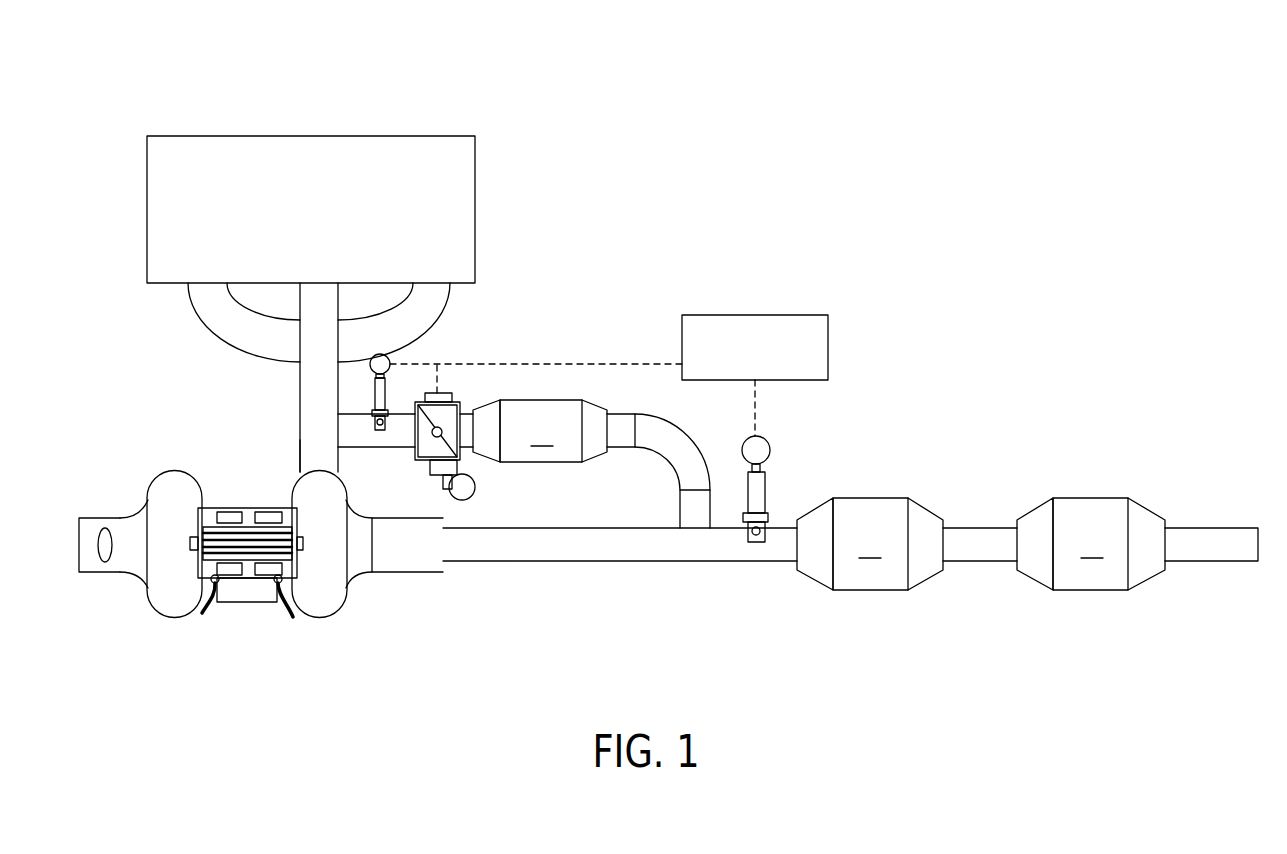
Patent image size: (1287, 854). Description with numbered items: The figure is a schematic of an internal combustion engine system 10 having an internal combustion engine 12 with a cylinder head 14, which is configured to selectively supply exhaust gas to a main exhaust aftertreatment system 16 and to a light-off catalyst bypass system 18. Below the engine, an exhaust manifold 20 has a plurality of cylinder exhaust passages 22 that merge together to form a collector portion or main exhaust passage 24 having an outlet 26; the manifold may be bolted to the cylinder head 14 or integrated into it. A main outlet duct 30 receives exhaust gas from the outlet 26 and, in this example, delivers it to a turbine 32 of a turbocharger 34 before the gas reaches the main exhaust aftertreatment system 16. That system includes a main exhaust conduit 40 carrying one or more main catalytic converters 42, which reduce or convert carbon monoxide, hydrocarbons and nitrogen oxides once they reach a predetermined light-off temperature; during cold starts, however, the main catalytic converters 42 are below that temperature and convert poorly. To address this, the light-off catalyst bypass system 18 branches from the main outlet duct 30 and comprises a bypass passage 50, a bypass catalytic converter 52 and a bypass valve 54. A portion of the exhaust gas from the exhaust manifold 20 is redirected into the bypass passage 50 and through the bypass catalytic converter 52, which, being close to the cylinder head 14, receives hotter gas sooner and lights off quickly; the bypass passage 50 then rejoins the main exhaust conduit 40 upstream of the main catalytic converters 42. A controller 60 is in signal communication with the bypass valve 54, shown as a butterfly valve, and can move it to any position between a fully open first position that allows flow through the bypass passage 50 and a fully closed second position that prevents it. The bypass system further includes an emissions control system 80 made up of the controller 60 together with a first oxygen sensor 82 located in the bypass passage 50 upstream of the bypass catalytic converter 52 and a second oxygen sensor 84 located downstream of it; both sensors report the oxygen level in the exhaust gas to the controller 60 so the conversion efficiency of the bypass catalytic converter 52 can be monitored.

The internal combustion engine system 10 is at (985, 116).
The internal combustion engine 12 is at (324, 114).
The cylinder head 14 is at (147, 249).
The main exhaust aftertreatment system 16 is at (1027, 606).
The light-off catalyst bypass system 18 is at (597, 348).
The exhaust manifold 20 is at (302, 353).
The cylinder exhaust passages 22 is at (315, 330).
The main exhaust passage 24 is at (273, 369).
The outlet 26 is at (318, 368).
The main outlet duct 30 is at (305, 463).
The turbine 32 is at (322, 603).
The turbocharger 34 is at (215, 624).
The main exhaust conduit 40 is at (576, 553).
The main catalytic converters 42 is at (1027, 544).
The bypass passage 50 is at (365, 437).
The bypass catalytic converter 52 is at (541, 431).
The bypass valve 54 is at (428, 464).
The controller 60 is at (788, 315).
The emissions control system 80 is at (750, 260).
The first oxygen sensor 82 is at (387, 393).
The second oxygen sensor 84 is at (765, 484).